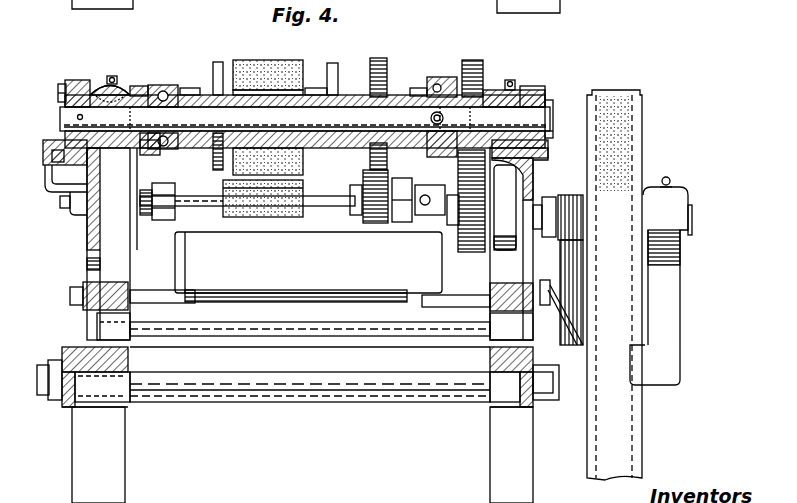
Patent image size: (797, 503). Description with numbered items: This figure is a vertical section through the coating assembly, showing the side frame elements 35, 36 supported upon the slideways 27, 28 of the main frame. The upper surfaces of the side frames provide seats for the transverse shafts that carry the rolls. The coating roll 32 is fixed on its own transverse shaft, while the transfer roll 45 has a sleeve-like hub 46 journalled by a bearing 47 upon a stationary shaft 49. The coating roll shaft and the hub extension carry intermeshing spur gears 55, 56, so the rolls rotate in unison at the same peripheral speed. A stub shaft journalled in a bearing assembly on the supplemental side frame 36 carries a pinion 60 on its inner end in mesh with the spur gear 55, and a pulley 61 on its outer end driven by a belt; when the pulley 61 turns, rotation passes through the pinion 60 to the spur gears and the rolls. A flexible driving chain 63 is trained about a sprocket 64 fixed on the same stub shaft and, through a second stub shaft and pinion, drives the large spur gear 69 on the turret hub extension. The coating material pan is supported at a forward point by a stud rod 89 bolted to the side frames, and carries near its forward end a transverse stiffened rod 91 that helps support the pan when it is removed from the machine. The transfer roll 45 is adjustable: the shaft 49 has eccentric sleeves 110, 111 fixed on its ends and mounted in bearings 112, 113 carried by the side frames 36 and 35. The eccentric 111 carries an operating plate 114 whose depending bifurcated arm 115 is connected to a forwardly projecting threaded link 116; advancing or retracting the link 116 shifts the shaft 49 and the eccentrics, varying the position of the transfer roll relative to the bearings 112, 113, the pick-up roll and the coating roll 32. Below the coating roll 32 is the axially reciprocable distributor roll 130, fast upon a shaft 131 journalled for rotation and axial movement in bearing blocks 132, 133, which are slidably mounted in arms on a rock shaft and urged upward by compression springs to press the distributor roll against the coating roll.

The slideway 27 is at (130, 374).
The slideway 28 is at (485, 374).
The coating roll 32 is at (238, 58).
The side frame element 35 is at (88, 255).
The side frame element 36 is at (513, 250).
The transfer roll 45 is at (306, 92).
The sleeve-like hub 46 is at (165, 90).
The bearing 47 is at (444, 82).
The stationary shaft 49 is at (535, 102).
The spur gear 55 is at (484, 92).
The spur gear 56 is at (492, 100).
The pinion 60 is at (457, 246).
The pulley 61 is at (643, 118).
The flexible driving chain 63 is at (576, 290).
The sprocket 64 is at (581, 206).
The large spur gear 69 is at (145, 296).
The stud rod 89 is at (445, 300).
The transverse stiffened rod 91 is at (320, 300).
The eccentric sleeve 110 is at (540, 122).
The eccentric sleeve 111 is at (133, 92).
The bearing 112 is at (522, 92).
The bearing 113 is at (97, 85).
The operating plate 114 is at (60, 104).
The bifurcated arm 115 is at (62, 200).
The threaded link 116 is at (58, 162).
The distributor roll 130 is at (268, 217).
The shaft 131 is at (332, 206).
The bearing block 132 is at (172, 177).
The bearing block 133 is at (400, 190).